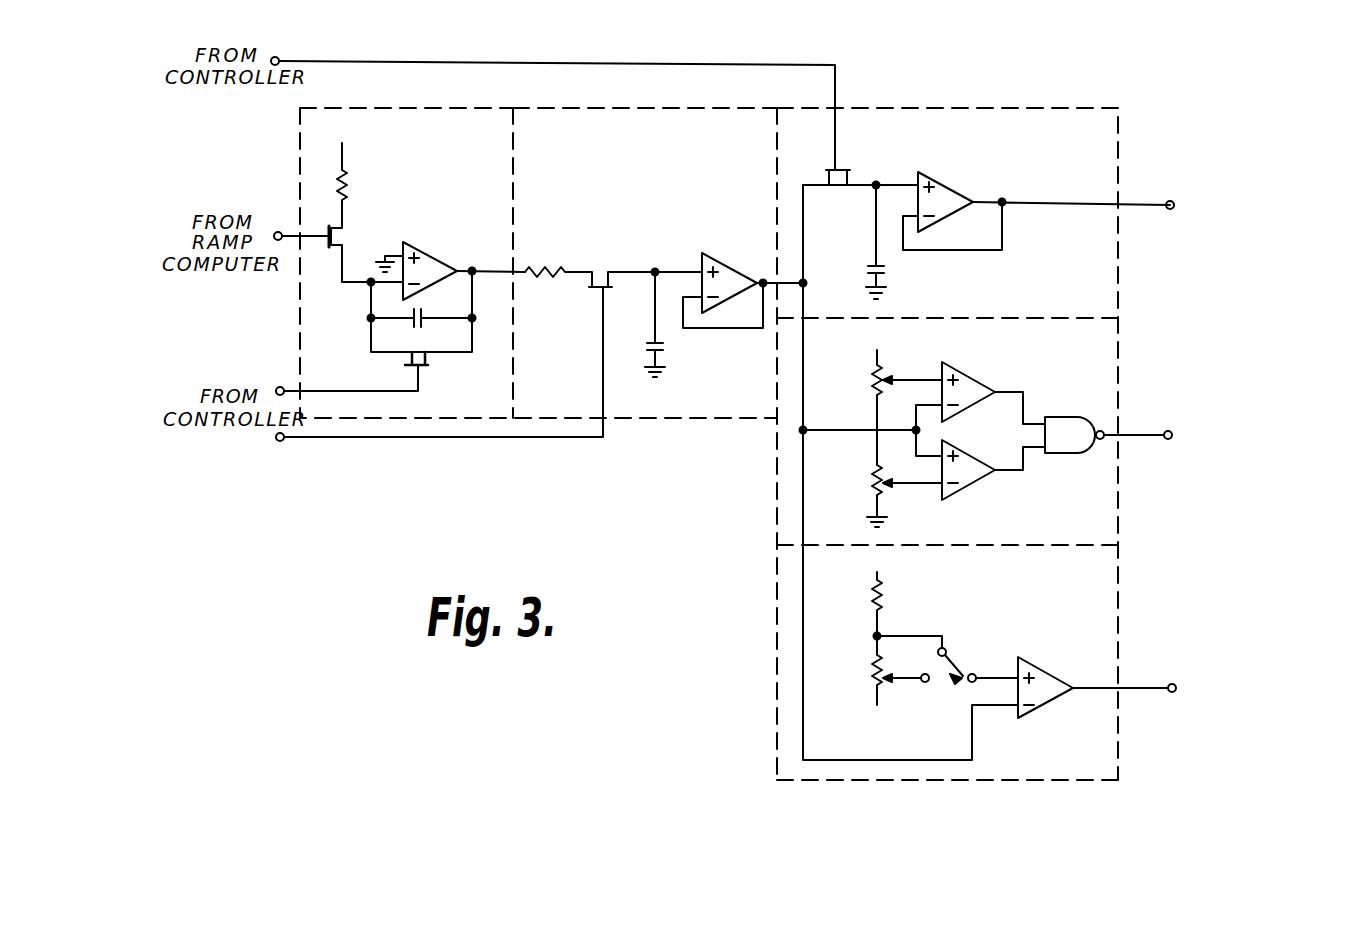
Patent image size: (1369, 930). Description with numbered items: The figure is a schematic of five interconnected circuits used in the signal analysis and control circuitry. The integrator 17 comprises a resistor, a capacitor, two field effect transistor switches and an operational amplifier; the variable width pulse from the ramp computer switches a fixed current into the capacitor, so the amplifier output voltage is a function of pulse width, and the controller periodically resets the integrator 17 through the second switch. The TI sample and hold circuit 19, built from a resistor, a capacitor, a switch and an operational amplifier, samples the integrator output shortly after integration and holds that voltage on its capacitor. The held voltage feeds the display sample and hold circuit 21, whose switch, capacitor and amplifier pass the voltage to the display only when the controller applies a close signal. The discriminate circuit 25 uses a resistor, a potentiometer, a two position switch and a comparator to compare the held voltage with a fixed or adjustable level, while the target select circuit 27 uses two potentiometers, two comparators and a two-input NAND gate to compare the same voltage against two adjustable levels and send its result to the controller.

The integrator 17 is at (430, 110).
The TI sample and hold circuit 19 is at (635, 118).
The display sample and hold circuit 21 is at (1108, 120).
The discriminate circuit 25 is at (1108, 603).
The target select circuit 27 is at (1108, 357).